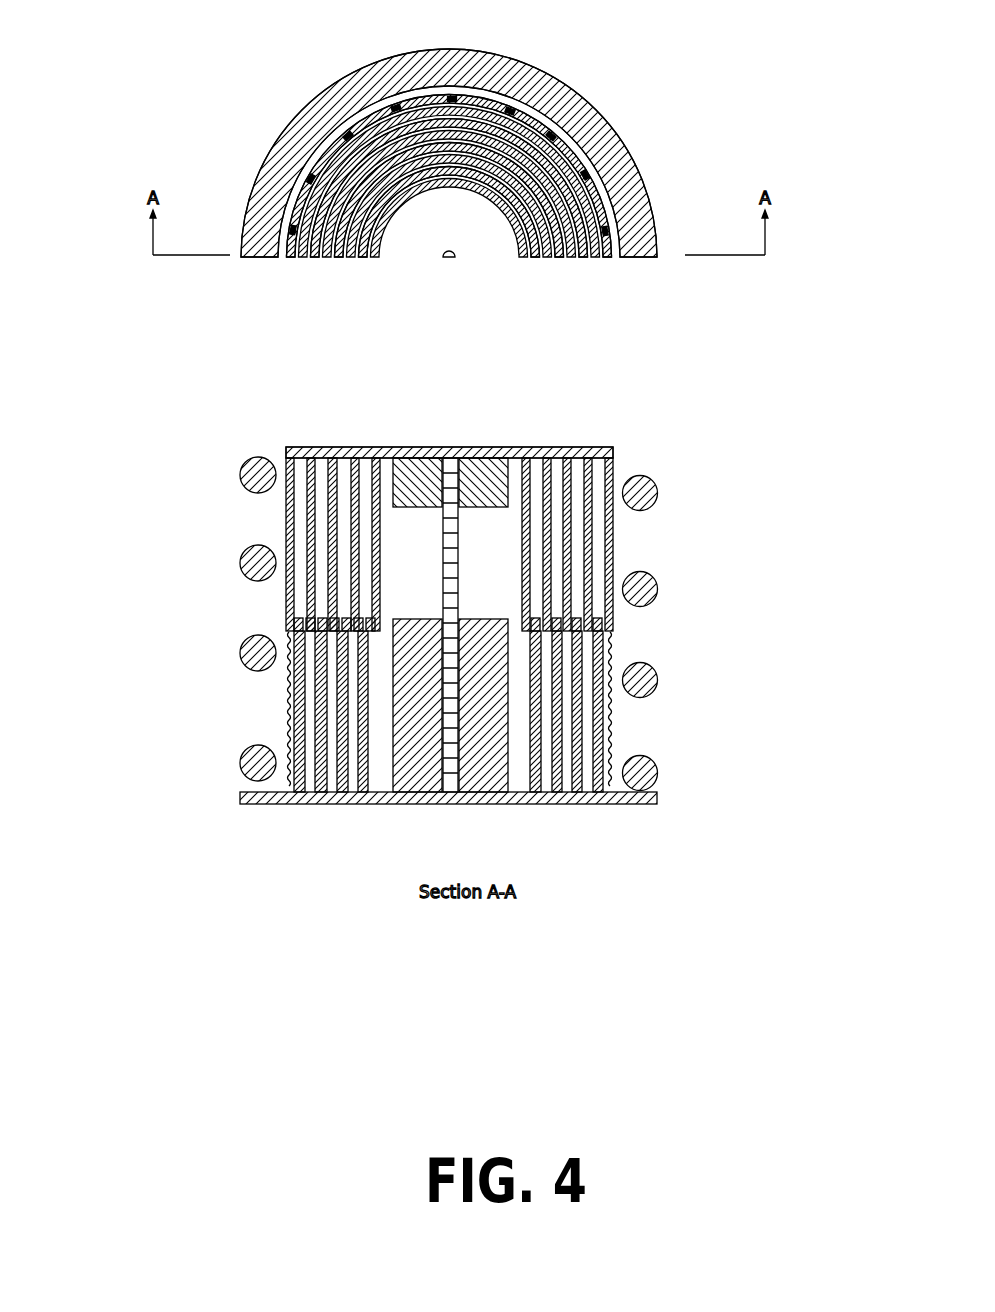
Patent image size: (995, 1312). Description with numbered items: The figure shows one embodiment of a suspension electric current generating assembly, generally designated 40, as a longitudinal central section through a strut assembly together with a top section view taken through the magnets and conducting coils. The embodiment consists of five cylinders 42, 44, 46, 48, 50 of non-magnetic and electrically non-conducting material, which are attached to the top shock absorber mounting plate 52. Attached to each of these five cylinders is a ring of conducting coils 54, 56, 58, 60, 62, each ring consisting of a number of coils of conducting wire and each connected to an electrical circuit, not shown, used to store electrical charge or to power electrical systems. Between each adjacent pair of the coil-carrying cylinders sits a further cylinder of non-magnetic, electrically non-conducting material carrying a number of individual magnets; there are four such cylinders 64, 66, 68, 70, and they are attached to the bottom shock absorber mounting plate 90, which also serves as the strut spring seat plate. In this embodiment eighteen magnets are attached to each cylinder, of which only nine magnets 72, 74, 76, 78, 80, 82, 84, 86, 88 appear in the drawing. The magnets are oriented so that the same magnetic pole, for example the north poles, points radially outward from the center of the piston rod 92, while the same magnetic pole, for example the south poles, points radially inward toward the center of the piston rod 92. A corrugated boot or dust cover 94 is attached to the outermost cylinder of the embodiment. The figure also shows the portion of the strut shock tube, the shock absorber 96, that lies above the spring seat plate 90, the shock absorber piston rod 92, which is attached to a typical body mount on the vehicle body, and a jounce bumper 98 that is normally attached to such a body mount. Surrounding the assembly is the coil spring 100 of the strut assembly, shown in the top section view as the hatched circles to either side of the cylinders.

The embodiment general designation 40 is at (662, 99).
The shock absorber to conducting coils attachment cylinder 42 is at (382, 535).
The shock absorber to conducting coils attachment cylinder 44 is at (355, 548).
The shock absorber to conducting coils attachment cylinder 46 is at (333, 545).
The shock absorber to conducting coils attachment cylinder 48 is at (312, 527).
The shock absorber to conducting coils attachment cylinder 50 is at (290, 500).
The top shock absorber mounting plate 52 is at (595, 448).
The ring of conducting coils 54 is at (517, 243).
The ring of conducting coils 56 is at (354, 263).
The ring of conducting coils 58 is at (333, 263).
The ring of conducting coils 60 is at (310, 263).
The ring of conducting coils 62 is at (287, 264).
The shock absorber to magnets attachment cylinder 64 is at (608, 264).
The shock absorber to magnets attachment cylinder 66 is at (585, 264).
The shock absorber to magnets attachment cylinder 68 is at (562, 264).
The shock absorber to magnets attachment cylinder 70 is at (538, 266).
The magnet 72 is at (291, 230).
The magnet 74 is at (311, 180).
The magnet 76 is at (347, 135).
The magnet 78 is at (396, 108).
The magnet 80 is at (453, 98).
The magnet 82 is at (512, 109).
The magnet 84 is at (552, 136).
The magnet 86 is at (587, 174).
The magnet 88 is at (608, 230).
The bottom shock absorber mounting plate 90 is at (588, 807).
The shock absorber piston rod 92 is at (453, 252).
The dust cover 94 is at (283, 718).
The shock absorber 96 is at (510, 768).
The jounce (spring) bumper 98 is at (508, 470).
The coil spring 100 is at (660, 234).